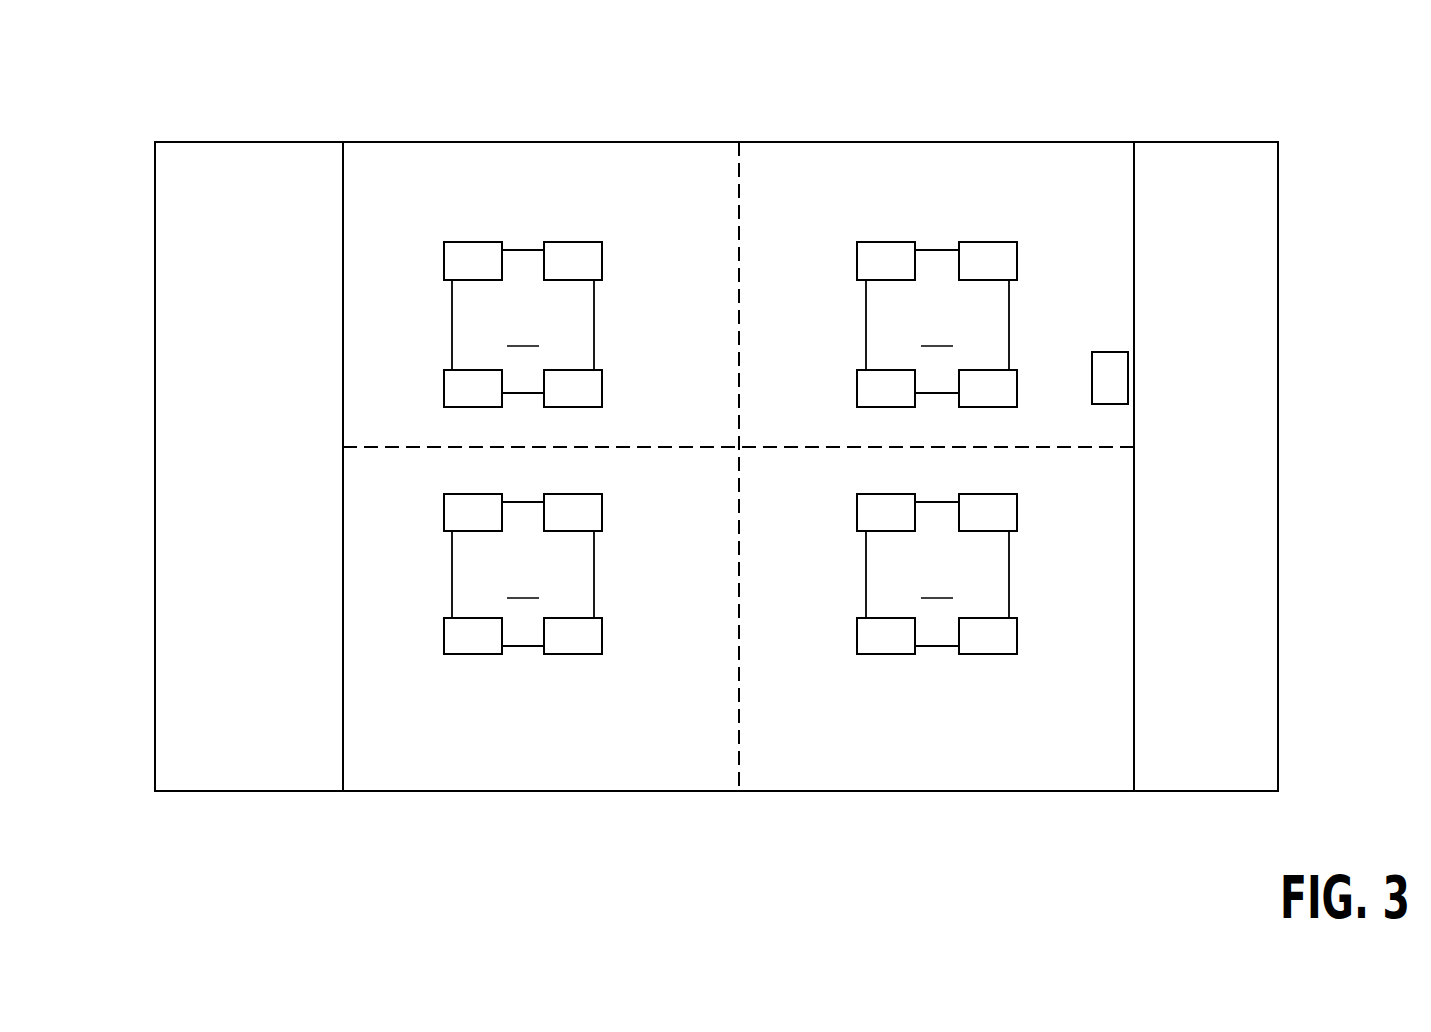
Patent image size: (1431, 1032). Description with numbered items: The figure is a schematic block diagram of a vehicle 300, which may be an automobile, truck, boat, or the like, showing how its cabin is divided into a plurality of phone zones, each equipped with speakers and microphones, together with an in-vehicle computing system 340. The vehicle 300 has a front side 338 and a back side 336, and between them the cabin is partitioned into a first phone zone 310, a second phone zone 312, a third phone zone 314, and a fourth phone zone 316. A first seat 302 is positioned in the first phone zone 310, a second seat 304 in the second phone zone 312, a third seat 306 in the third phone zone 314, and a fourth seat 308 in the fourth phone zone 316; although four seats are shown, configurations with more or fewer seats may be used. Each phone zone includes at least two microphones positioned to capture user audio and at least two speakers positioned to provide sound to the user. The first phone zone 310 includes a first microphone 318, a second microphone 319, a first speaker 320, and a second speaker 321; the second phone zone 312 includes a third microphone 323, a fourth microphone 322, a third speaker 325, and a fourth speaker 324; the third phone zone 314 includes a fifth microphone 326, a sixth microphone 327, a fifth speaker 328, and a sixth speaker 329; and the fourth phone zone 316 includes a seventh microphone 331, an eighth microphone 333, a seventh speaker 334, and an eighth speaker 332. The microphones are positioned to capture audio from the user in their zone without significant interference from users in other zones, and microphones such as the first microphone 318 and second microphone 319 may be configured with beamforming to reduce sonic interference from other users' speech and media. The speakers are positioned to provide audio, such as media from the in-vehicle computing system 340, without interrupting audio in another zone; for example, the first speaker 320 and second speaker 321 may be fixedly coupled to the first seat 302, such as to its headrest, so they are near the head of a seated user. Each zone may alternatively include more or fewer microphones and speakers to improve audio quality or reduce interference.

The vehicle 300 is at (1374, 80).
The first seat 302 is at (955, 324).
The second seat 304 is at (958, 573).
The third seat 306 is at (542, 324).
The fourth seat 308 is at (542, 573).
The first phone zone 310 is at (1071, 130).
The second phone zone 312 is at (789, 800).
The third phone zone 314 is at (649, 134).
The fourth phone zone 316 is at (658, 800).
The first microphone 318 is at (970, 242).
The second microphone 319 is at (1002, 407).
The first speaker 320 is at (867, 242).
The second speaker 321 is at (880, 407).
The fourth microphone 322 is at (1002, 654).
The third microphone 323 is at (977, 494).
The fourth speaker 324 is at (880, 654).
The third speaker 325 is at (880, 494).
The fifth microphone 326 is at (567, 242).
The sixth microphone 327 is at (587, 407).
The fifth speaker 328 is at (467, 242).
The sixth speaker 329 is at (465, 407).
The seventh microphone 331 is at (567, 494).
The eighth speaker 332 is at (465, 654).
The eighth microphone 333 is at (587, 654).
The seventh speaker 334 is at (467, 494).
The back side 336 is at (146, 378).
The front side 338 is at (1287, 373).
The in-vehicle computing system 340 is at (1128, 367).